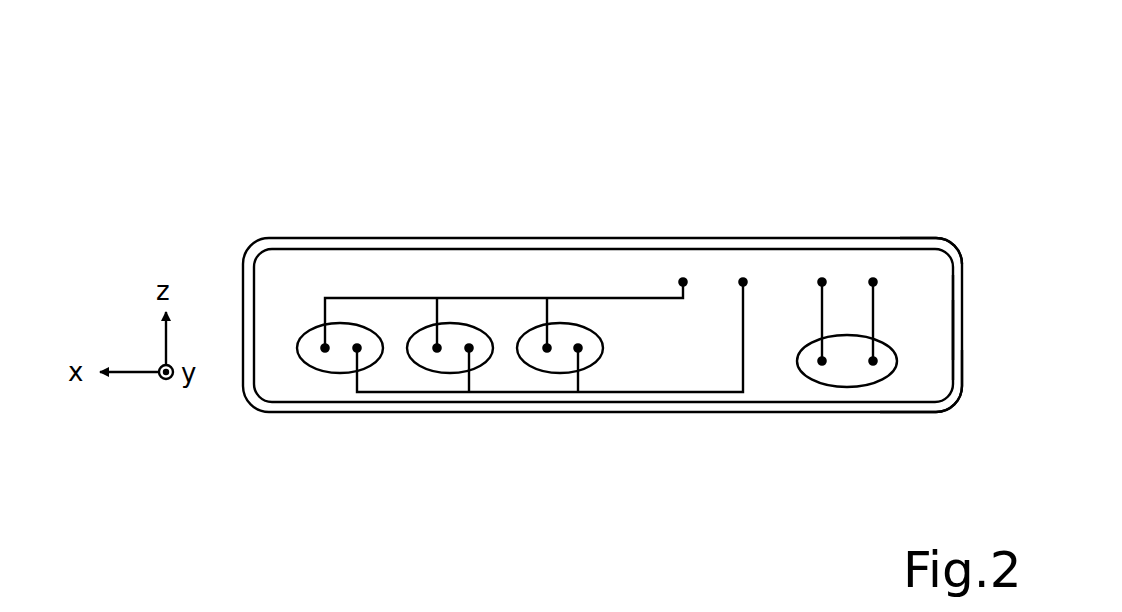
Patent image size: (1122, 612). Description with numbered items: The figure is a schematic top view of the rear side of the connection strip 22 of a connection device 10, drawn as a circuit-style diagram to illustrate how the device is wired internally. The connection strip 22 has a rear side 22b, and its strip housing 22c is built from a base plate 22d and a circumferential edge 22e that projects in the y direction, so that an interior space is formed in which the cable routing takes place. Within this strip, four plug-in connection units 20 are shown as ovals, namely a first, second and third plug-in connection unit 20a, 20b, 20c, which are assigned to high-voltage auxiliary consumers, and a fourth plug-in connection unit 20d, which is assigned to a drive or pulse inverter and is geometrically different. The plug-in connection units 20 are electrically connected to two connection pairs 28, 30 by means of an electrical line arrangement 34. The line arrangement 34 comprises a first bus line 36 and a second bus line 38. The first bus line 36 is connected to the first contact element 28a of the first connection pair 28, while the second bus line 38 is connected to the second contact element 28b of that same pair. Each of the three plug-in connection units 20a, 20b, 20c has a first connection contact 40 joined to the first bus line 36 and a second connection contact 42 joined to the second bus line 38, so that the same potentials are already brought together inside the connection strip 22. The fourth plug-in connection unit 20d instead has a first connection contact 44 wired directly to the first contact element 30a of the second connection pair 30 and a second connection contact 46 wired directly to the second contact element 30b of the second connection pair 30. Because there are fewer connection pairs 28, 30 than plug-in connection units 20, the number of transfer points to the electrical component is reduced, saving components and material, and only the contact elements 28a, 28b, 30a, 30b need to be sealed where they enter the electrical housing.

The connection device 10 is at (936, 90).
The plug-in connection units 20 is at (579, 421).
The first plug-in connection unit 20a is at (300, 359).
The second plug-in connection unit 20b is at (478, 368).
The third plug-in connection unit 20c is at (595, 363).
The fourth plug-in connection unit 20d is at (892, 372).
The connection strip 22 is at (241, 241).
The second side 22b is at (952, 241).
The strip housing 22c is at (957, 318).
The base plate 22d is at (935, 350).
The circumferential edge 22e is at (955, 388).
The first connection pair 28 is at (772, 170).
The first contact element 28a is at (683, 282).
The second contact element 28b is at (743, 282).
The second connection pair 30 is at (922, 170).
The first contact element 30a is at (822, 282).
The second contact element 30b is at (873, 282).
The electrical line arrangement 34 is at (478, 268).
The first bus line 36 is at (517, 298).
The second bus line 38 is at (693, 392).
The first connection contact 40 is at (325, 352).
The second connection contact 42 is at (357, 352).
The first connection contact 44 is at (822, 365).
The second connection contact 46 is at (873, 365).